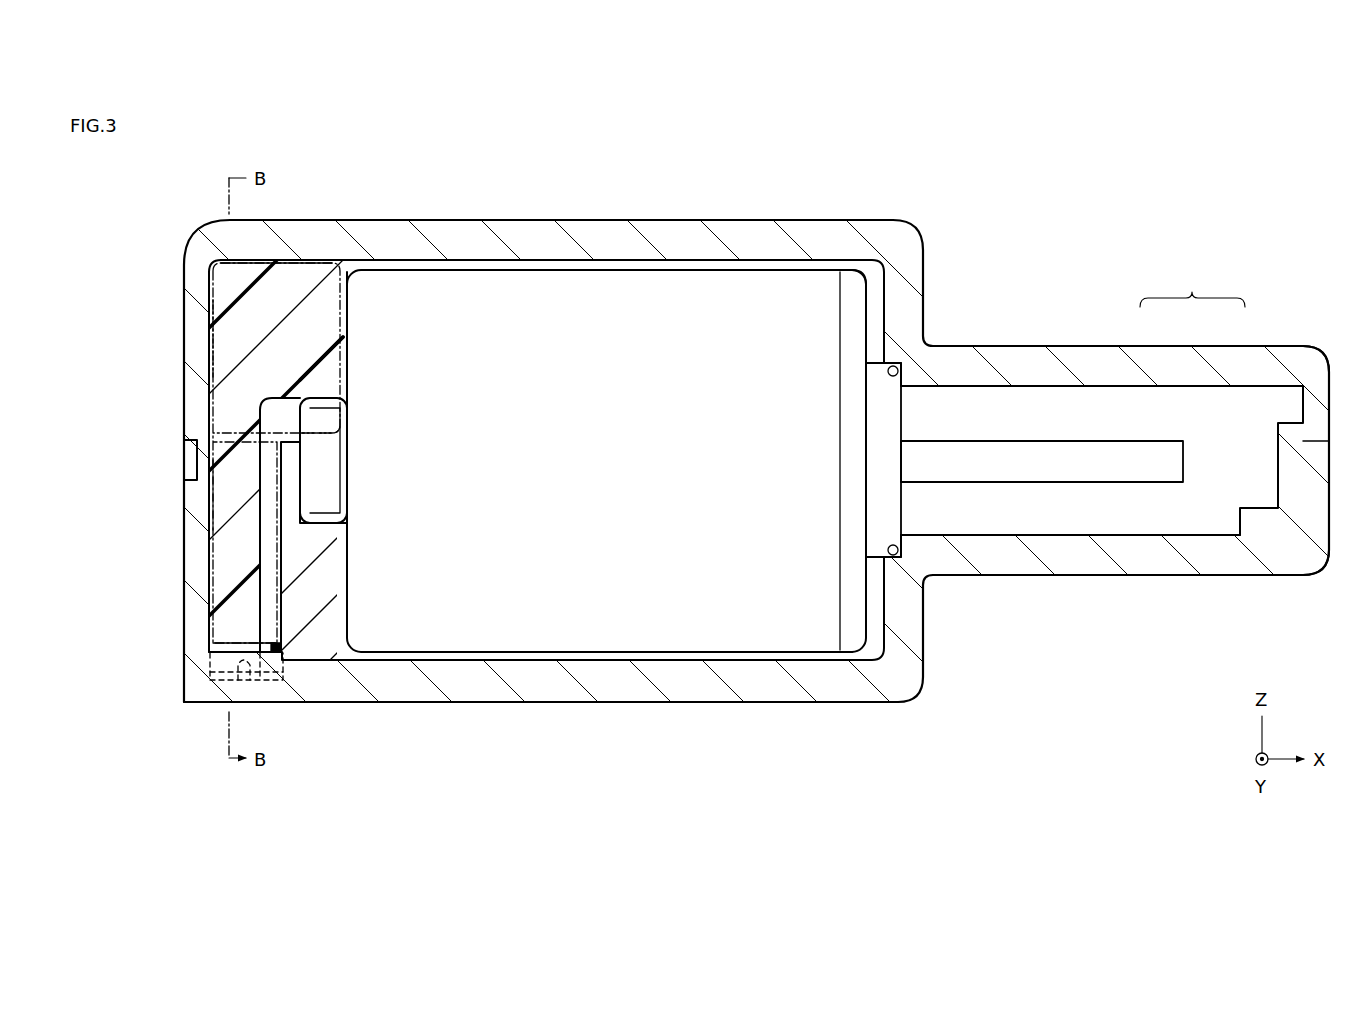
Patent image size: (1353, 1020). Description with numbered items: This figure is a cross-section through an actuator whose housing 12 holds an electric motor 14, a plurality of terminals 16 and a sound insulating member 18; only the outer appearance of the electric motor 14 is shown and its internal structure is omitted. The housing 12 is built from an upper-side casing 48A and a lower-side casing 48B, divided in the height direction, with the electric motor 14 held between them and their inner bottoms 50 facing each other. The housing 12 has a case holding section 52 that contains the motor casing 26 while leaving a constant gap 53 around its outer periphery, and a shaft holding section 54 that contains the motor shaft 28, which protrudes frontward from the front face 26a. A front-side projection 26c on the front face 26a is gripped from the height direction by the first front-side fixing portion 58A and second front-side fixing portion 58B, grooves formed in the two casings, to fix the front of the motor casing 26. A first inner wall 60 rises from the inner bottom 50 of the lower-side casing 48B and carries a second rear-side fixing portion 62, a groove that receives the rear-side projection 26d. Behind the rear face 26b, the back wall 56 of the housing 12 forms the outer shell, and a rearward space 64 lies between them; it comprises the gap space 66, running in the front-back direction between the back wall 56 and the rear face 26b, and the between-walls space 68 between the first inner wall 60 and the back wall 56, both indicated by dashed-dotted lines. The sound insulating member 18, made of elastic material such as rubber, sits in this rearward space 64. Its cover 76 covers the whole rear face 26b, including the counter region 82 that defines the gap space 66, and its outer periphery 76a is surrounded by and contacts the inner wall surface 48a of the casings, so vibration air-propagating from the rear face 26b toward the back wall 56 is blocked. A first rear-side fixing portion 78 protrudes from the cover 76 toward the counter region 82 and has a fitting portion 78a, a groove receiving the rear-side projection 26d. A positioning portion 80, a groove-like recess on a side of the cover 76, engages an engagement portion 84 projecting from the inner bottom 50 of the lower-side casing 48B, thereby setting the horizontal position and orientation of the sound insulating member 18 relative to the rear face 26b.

The housing 12 is at (1192, 286).
The electric motor 14 is at (680, 257).
The terminals 16 is at (268, 642).
The sound insulating member 18 is at (307, 258).
The motor casing 26 is at (533, 262).
The front face 26a is at (870, 305).
The rear face 26b is at (347, 292).
The front-side projection 26c is at (880, 401).
The rear-side projection 26d is at (330, 452).
The motor shaft 28 is at (1040, 448).
The inner wall surface 48a is at (238, 277).
The upper-side casing 48A is at (1222, 356).
The lower-side casing 48B is at (1158, 553).
The inner bottoms 50 is at (765, 272).
The case holding section 52 is at (616, 645).
The gap 53 is at (455, 258).
The shaft holding section 54 is at (1094, 532).
The back wall 56 is at (201, 556).
The first front-side fixing portion 58A is at (900, 366).
The second front-side fixing portion 58B is at (902, 560).
The first inner wall 60 is at (313, 610).
The second rear-side fixing portion 62 is at (340, 520).
The rearward space 64 is at (206, 298).
The gap space 66 is at (212, 338).
The between-walls space 68 is at (212, 492).
The cover 76 is at (237, 418).
The outer periphery 76a is at (246, 270).
The first rear-side fixing portion 78 is at (320, 322).
The fitting portion 78a is at (330, 398).
The positioning portion 80 is at (236, 660).
The counter region 82 is at (343, 370).
The engagement portion 84 is at (230, 672).